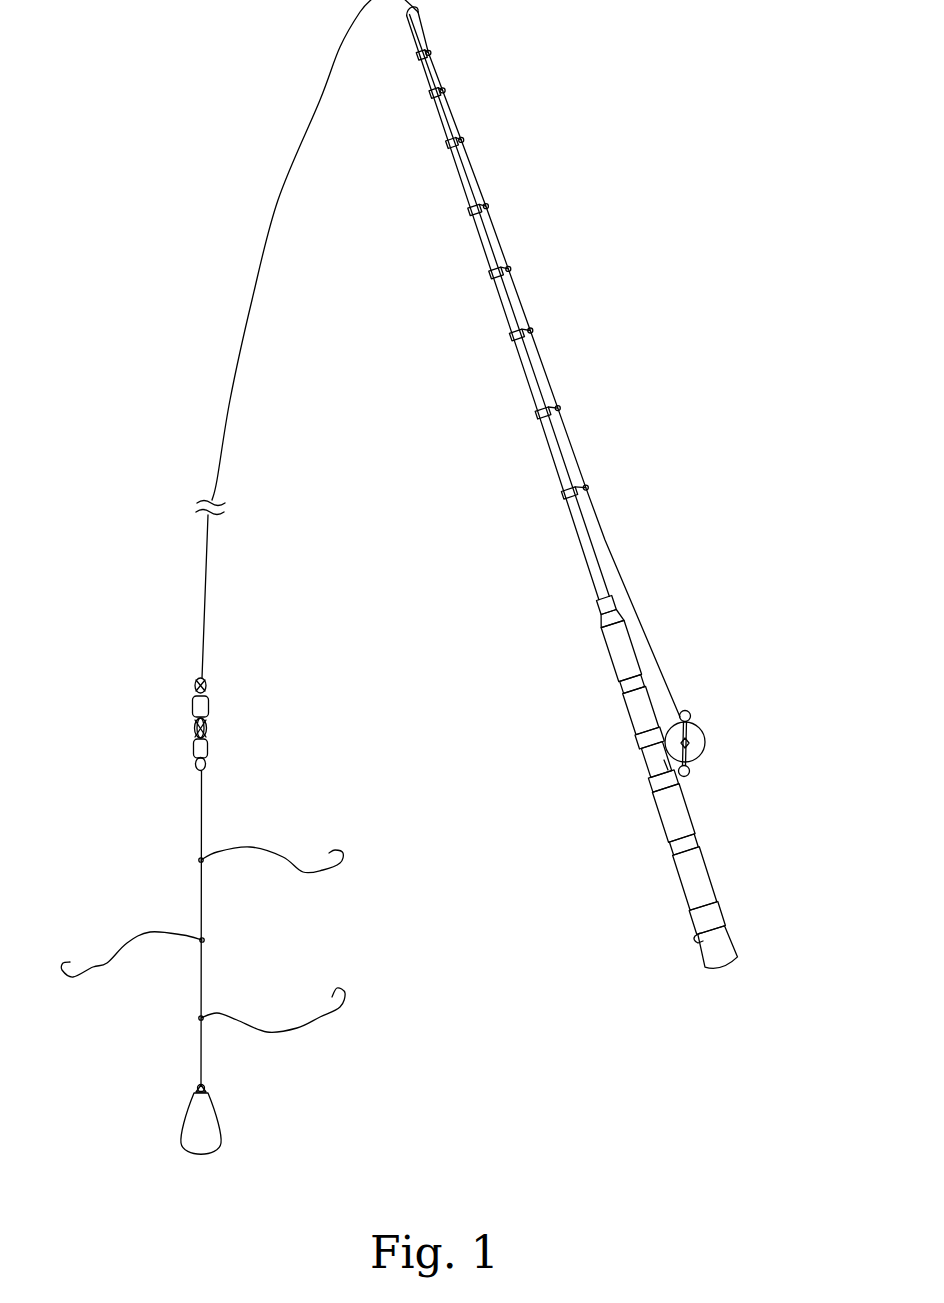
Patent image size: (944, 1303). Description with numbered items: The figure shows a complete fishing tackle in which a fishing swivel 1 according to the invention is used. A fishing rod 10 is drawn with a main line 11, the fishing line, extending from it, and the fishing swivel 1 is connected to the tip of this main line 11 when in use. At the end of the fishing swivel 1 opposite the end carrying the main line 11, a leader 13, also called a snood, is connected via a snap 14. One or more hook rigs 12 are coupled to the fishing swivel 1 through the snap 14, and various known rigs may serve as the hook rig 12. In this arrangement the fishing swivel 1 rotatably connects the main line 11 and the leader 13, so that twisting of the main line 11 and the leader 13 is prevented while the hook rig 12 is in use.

The fishing rod 10 is at (626, 425).
The main line 11 is at (214, 330).
The fishing swivel 1 is at (199, 732).
The snap 14 is at (220, 769).
The leader 13 is at (175, 820).
The hook rig 12 is at (372, 832).